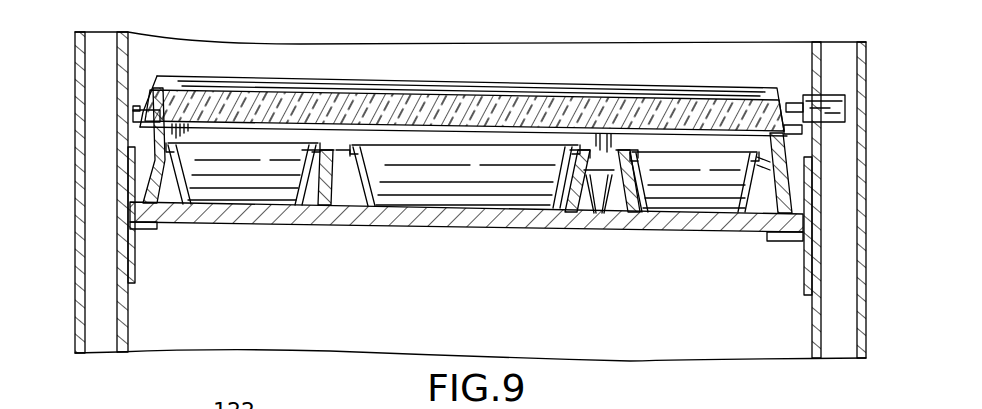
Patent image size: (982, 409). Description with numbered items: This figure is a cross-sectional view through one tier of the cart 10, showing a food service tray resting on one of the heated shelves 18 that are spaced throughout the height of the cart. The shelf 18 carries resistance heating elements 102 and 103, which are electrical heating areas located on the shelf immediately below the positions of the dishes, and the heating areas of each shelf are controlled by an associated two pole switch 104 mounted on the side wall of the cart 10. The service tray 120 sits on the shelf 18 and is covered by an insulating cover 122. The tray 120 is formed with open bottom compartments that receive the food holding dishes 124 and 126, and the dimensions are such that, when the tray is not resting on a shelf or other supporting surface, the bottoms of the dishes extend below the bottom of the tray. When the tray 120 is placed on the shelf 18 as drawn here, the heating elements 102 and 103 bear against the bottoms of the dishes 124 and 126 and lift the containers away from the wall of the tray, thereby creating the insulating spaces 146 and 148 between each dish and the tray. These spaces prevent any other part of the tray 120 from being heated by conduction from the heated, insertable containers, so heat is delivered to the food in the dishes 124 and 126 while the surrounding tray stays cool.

The cart 10 is at (66, 203).
The shelf 18 is at (313, 218).
The resistance heating element 102 is at (230, 220).
The resistance heating element 103 is at (407, 218).
The two pole switch 104 is at (845, 101).
The service tray 120 is at (601, 175).
The insulating cover 122 is at (478, 80).
The dish 124 is at (458, 188).
The dish 126 is at (697, 193).
The insulating space 146 is at (603, 172).
The insulating space 148 is at (353, 133).